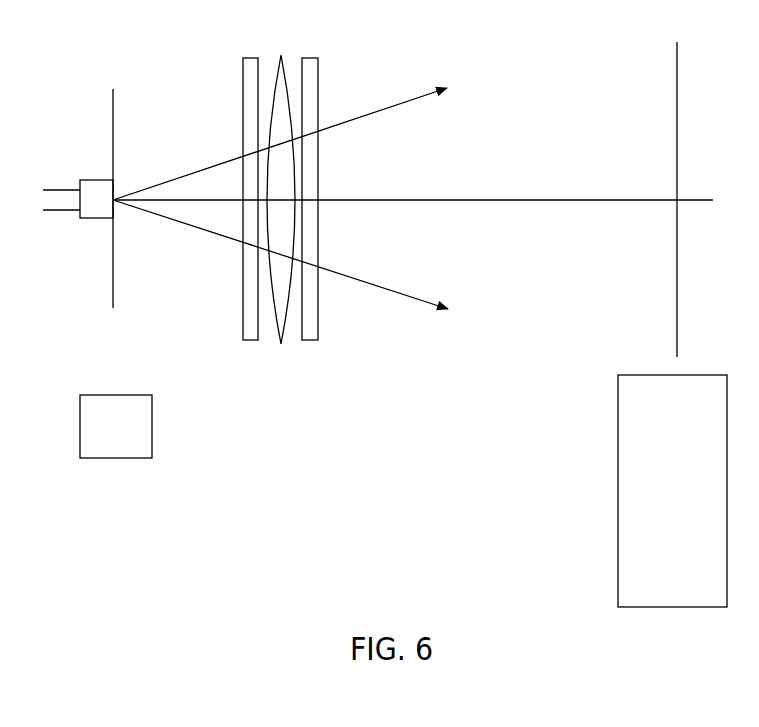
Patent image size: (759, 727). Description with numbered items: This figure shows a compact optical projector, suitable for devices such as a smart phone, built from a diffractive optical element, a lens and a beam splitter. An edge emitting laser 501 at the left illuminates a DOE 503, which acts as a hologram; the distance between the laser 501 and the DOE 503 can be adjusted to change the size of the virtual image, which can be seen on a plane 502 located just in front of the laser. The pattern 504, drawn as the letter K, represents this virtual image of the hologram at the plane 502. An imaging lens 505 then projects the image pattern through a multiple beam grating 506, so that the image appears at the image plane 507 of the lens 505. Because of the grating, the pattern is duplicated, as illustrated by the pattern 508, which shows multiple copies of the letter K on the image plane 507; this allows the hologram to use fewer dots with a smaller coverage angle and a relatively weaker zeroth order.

The edge emitting laser 501 is at (93, 219).
The plane 502 is at (114, 108).
The DOE 503 is at (250, 58).
The pattern 504 is at (111, 395).
The imaging lens 505 is at (283, 55).
The multiple beam grating 506 is at (310, 58).
The image plane 507 is at (676, 80).
The pattern 508 is at (618, 427).